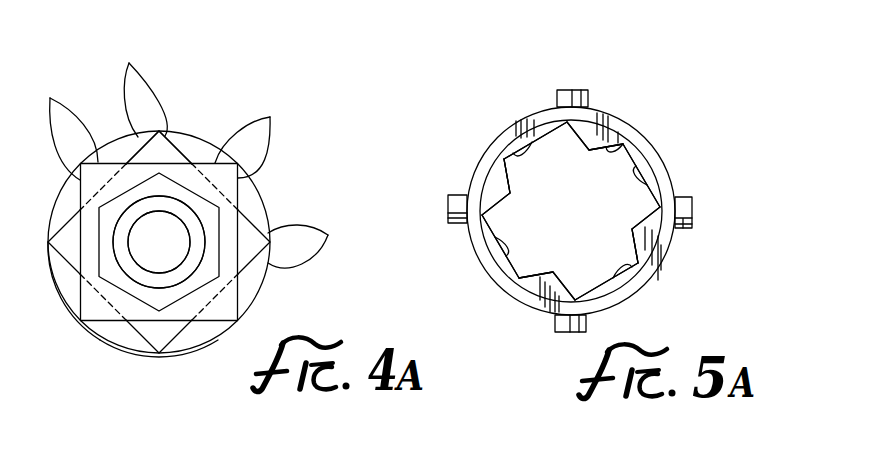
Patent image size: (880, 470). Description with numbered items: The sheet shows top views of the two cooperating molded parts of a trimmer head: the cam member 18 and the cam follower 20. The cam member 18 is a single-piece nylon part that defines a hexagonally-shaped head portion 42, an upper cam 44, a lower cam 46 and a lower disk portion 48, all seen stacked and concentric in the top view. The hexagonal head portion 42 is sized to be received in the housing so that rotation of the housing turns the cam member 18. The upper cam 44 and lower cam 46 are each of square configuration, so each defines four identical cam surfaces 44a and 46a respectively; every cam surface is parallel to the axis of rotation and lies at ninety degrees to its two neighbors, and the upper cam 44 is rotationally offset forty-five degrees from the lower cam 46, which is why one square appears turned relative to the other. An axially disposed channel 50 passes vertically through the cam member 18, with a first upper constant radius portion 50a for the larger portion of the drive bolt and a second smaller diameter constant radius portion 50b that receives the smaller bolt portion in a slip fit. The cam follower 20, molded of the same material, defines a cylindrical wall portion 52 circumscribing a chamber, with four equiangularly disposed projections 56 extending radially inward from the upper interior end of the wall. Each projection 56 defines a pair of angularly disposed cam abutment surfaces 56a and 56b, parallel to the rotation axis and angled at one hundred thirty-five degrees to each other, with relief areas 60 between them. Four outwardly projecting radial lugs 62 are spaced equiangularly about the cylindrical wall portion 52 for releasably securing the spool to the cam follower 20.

In FIG. 4A, the cam member 18 is at (194, 137).
In FIG. 4A, the head portion 42 is at (166, 342).
In FIG. 4A, the upper cam 44 is at (146, 322).
In FIG. 4A, the cam surfaces 44a is at (159, 132).
In FIG. 4A, the lower cam 46 is at (189, 328).
In FIG. 4A, the cam surfaces 46a is at (232, 154).
In FIG. 4A, the lower disk portion 48 is at (68, 295).
In FIG. 4A, the channel 50 is at (166, 249).
In FIG. 4A, the first upper constant radius portion 50a is at (134, 275).
In FIG. 4A, the second smaller diameter constant radius portion 50b is at (137, 248).
In FIG. 5A, the cam follower 20 is at (487, 147).
In FIG. 5A, the cylindrical wall portion 52 is at (553, 223).
In FIG. 5A, the projections 56 is at (588, 155).
In FIG. 5A, the cam abutment surface 56a is at (538, 130).
In FIG. 5A, the cam abutment surface 56b is at (622, 148).
In FIG. 5A, the relief areas 60 is at (521, 140).
In FIG. 5A, the radial lugs 62 is at (557, 98).